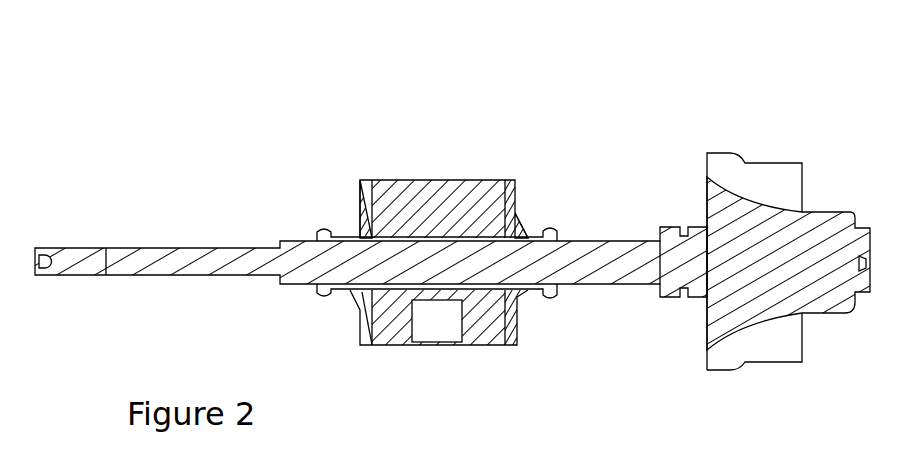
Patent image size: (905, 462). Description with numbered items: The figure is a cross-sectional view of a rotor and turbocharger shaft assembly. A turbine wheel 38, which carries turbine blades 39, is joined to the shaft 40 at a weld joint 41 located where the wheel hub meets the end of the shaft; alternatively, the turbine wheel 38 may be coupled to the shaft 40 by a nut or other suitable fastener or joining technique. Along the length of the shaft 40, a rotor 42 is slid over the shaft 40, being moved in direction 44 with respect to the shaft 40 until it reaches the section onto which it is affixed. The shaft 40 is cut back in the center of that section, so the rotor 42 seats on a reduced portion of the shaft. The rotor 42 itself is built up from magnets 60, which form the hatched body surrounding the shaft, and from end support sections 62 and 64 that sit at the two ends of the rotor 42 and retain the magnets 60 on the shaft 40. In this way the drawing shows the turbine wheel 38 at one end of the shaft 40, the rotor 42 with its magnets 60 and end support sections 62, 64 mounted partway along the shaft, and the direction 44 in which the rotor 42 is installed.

The turbine wheel 38 is at (773, 223).
The turbine blades 39 is at (742, 172).
The shaft 40 is at (243, 257).
The weld joint 41 is at (707, 235).
The rotor 42 is at (343, 325).
The direction 44 is at (392, 162).
The magnets 60 is at (437, 262).
The end support section 62 is at (518, 233).
The end support section 64 is at (362, 227).